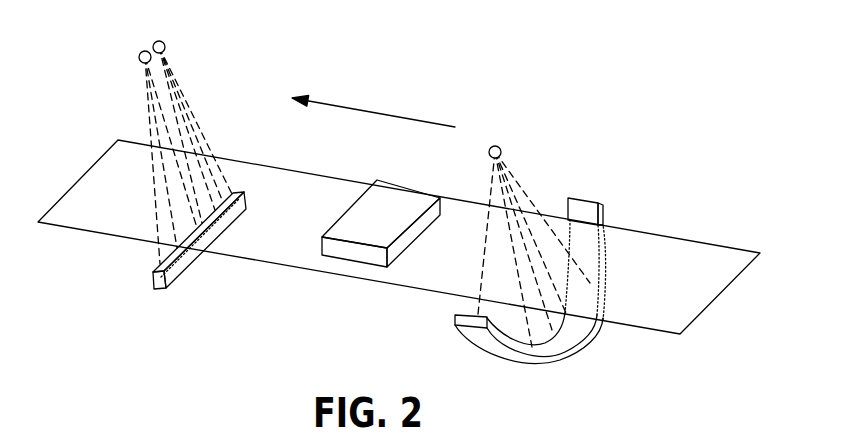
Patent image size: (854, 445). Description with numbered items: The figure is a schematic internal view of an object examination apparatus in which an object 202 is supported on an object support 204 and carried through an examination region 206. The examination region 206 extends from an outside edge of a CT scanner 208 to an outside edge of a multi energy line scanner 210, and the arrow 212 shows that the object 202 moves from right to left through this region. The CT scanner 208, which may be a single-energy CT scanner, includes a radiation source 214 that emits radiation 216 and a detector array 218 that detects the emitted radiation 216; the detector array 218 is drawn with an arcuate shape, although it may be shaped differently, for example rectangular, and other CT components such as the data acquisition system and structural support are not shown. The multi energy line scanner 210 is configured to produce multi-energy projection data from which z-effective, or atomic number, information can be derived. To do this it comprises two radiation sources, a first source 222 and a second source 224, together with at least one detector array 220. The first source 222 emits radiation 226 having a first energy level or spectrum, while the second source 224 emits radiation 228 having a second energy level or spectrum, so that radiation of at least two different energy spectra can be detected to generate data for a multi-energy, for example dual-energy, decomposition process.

The object 202 is at (352, 253).
The object support 204 is at (664, 268).
The examination region 206 is at (364, 151).
The CT scanner 208 is at (557, 159).
The multi energy line scanner 210 is at (222, 90).
The arrow 212 is at (370, 110).
The radiation source 214 is at (500, 148).
The radiation 216 is at (492, 186).
The detector array 218 is at (472, 334).
The detector array 220 is at (163, 287).
The first source 222 is at (140, 54).
The second source 224 is at (164, 44).
The radiation 226 is at (148, 108).
The radiation 228 is at (205, 135).